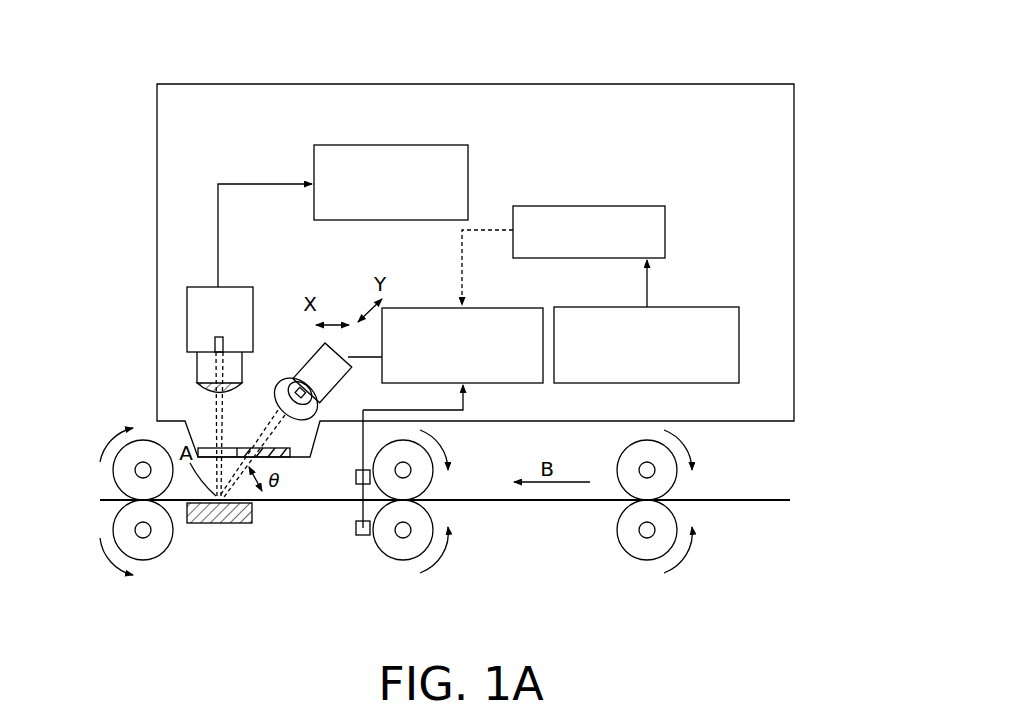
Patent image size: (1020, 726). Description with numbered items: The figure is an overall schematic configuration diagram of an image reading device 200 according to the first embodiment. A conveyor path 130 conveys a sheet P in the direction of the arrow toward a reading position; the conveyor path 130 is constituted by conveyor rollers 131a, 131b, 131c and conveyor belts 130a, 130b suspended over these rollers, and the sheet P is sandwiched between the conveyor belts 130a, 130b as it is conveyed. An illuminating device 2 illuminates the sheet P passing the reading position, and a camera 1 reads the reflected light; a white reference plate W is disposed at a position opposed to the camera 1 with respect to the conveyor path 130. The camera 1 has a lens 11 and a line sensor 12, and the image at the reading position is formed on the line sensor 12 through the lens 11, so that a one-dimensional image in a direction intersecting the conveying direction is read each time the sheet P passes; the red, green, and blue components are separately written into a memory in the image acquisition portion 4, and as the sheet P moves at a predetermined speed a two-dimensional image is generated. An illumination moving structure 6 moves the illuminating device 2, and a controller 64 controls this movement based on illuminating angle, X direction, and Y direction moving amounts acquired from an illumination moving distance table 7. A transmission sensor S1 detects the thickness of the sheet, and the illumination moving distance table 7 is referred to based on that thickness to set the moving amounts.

The image reading device 200 is at (488, 81).
The image acquisition portion 4 is at (335, 145).
The controller 64 is at (628, 206).
The illumination moving structure 6 is at (423, 308).
The illumination moving distance table 7 is at (712, 307).
The camera 1 is at (184, 301).
The line sensor 12 is at (215, 334).
The lens 11 is at (198, 378).
The illuminating device 2 is at (305, 362).
The transmission sensor S1 is at (390, 460).
The conveyor path 130 is at (564, 503).
The conveyor belt 130a is at (739, 555).
The conveyor belt 130b is at (735, 538).
The conveyor roller 131a is at (636, 561).
The conveyor roller 131b is at (390, 558).
The conveyor roller 131c is at (162, 561).
The white reference plate W is at (233, 525).
The sheet P is at (477, 499).